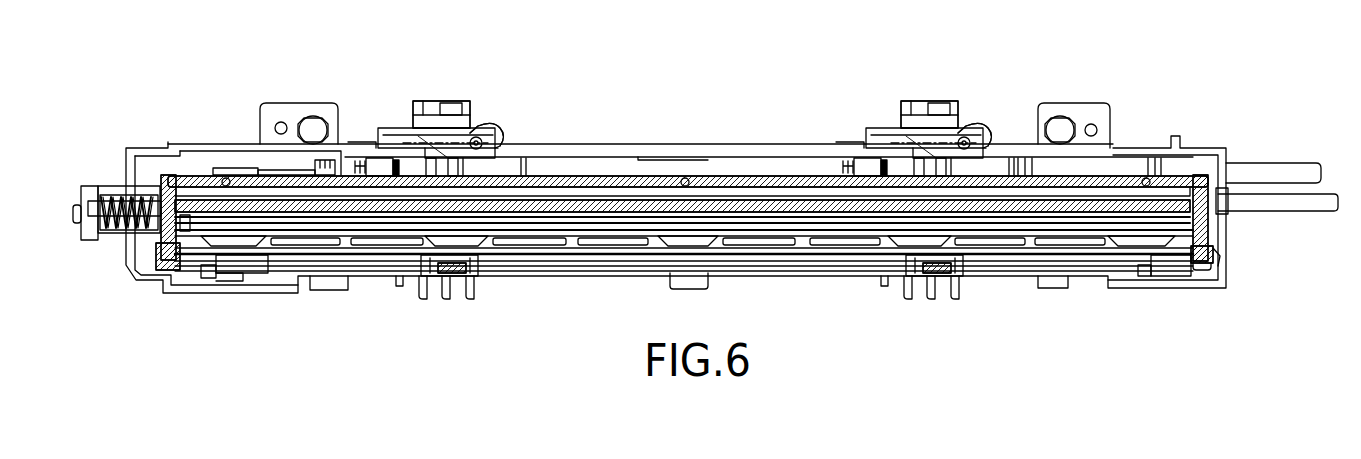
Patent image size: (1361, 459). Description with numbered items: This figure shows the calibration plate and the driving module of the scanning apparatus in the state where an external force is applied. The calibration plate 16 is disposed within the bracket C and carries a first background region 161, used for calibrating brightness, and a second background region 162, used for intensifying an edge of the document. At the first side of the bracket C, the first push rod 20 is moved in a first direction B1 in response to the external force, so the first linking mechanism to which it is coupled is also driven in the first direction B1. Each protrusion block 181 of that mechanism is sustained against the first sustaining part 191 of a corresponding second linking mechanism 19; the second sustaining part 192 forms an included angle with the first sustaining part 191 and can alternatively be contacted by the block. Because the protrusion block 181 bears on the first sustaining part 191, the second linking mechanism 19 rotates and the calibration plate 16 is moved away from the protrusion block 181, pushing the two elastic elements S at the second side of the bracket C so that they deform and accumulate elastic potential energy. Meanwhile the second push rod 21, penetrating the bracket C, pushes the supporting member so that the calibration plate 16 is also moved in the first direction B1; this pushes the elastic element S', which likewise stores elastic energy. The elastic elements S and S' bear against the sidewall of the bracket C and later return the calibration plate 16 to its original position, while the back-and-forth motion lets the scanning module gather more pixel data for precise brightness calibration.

The bracket C is at (150, 141).
The elastic element S' is at (113, 191).
The second linking mechanism 19 is at (400, 140).
The first sustaining part 191 is at (432, 127).
The protrusion block 181 is at (440, 93).
The second sustaining part 192 is at (487, 124).
The first direction B1 is at (937, 62).
The second background region 162 is at (1105, 165).
The first background region 161 is at (1160, 186).
The first push rod 20 is at (1262, 165).
The second push rod 21 is at (1268, 195).
The calibration plate 16 is at (1210, 248).
The elastic element S is at (687, 291).